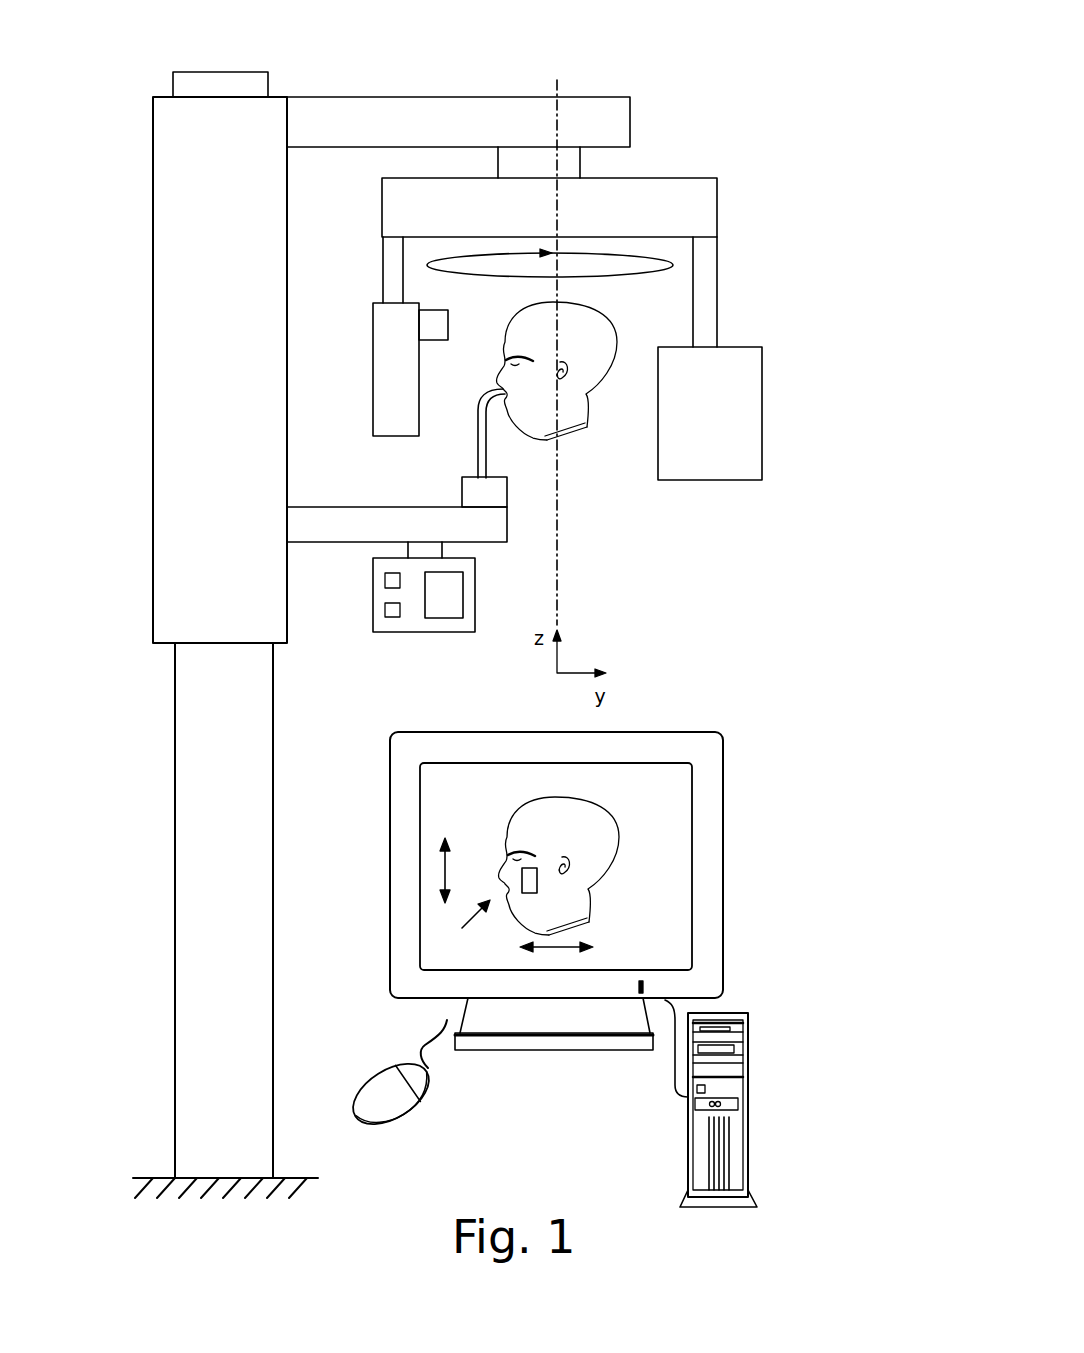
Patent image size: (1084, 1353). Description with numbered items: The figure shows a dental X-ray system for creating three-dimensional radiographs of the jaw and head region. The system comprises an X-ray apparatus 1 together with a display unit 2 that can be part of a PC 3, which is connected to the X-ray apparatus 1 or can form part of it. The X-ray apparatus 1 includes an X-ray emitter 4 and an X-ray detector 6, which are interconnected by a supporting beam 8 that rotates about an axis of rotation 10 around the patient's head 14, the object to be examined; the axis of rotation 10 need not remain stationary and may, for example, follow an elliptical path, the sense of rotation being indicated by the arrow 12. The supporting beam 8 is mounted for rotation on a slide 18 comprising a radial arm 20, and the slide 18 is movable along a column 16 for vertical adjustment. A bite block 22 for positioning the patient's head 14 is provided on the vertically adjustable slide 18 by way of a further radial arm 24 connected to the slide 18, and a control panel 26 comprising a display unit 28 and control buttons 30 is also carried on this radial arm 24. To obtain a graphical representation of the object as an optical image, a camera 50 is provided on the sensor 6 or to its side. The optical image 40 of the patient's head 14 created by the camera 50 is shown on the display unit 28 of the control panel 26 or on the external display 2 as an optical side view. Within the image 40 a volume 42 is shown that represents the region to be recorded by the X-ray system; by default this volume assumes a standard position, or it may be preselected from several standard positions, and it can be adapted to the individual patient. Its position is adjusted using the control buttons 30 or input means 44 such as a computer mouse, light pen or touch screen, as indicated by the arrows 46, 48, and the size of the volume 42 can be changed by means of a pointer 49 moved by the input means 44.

The X-ray apparatus 1 is at (289, 72).
The display unit 2 is at (748, 860).
The PC 3 is at (748, 1040).
The X-ray emitter 4 is at (743, 395).
The X-ray detector 6 is at (388, 417).
The supporting beam 8 is at (697, 215).
The axis of rotation 10 is at (557, 80).
The rotation direction 12 is at (673, 265).
The patient's head 14 is at (586, 394).
The column 16 is at (187, 88).
The slide 18 is at (187, 258).
The radial arm 20 is at (371, 107).
The bite block 22 is at (483, 453).
The radial arm 24 is at (482, 523).
The control panel 26 is at (380, 595).
The display unit 28 is at (447, 608).
The control buttons 30 is at (387, 608).
The optical image 40 is at (607, 828).
The volume 42 is at (537, 880).
The input means 44 is at (373, 1128).
The arrow 46 is at (445, 872).
The arrow 48 is at (593, 947).
The pointer 49 is at (462, 928).
The camera 50 is at (441, 341).